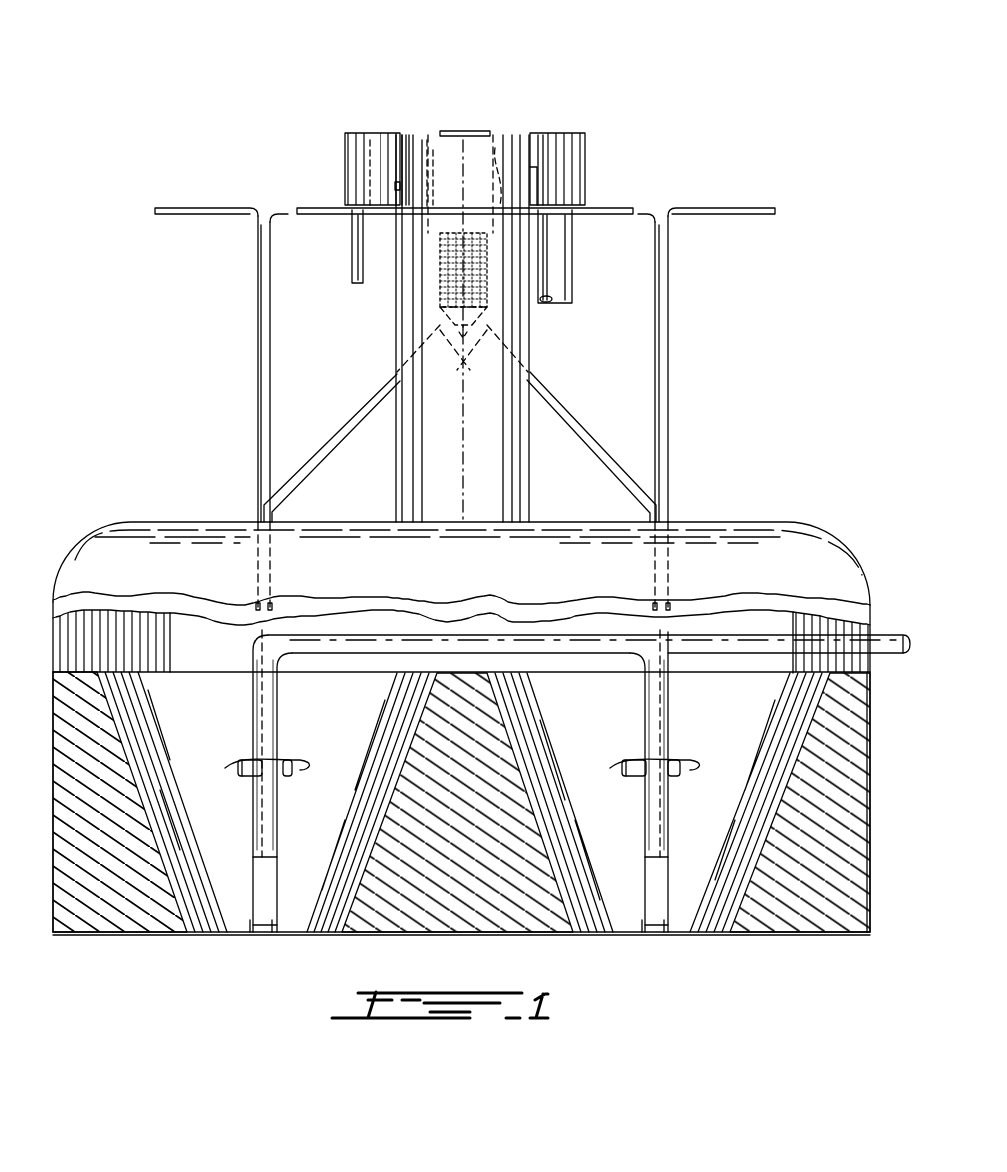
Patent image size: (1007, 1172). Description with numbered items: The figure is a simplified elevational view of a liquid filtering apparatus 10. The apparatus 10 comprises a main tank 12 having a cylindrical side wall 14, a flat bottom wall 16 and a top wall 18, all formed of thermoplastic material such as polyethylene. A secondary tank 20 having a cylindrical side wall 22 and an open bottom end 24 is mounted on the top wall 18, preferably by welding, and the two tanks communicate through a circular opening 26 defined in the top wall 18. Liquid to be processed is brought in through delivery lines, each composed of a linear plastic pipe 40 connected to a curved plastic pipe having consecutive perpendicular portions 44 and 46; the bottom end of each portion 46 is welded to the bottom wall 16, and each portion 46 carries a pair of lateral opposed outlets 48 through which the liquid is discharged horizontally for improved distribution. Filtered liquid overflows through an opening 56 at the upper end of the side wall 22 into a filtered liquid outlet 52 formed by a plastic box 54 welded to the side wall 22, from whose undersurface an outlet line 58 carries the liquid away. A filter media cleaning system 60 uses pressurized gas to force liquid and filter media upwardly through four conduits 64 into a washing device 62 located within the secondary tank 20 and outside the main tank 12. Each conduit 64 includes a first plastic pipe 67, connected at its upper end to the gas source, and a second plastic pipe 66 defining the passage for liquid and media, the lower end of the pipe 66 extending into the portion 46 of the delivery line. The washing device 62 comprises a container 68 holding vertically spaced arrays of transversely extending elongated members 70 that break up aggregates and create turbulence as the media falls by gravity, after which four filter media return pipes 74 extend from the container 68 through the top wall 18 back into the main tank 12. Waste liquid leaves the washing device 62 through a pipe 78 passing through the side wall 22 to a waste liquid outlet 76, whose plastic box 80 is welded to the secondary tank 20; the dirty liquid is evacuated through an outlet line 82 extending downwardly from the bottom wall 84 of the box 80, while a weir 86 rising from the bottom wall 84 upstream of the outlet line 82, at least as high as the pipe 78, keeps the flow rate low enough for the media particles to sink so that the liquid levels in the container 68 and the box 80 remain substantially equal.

The apparatus 10 is at (680, 98).
The main tank 12 is at (833, 937).
The cylindrical side wall 14 is at (53, 632).
The flat bottom wall 16 is at (148, 936).
The top wall 18 is at (350, 522).
The secondary tank 20 is at (535, 333).
The cylindrical side wall 22 is at (398, 333).
The open bottom end 24 is at (440, 522).
The circular opening 26 is at (466, 528).
The linear plastic pipe 40 is at (645, 640).
The perpendicular portion 44 is at (372, 640).
The perpendicular portion 46 is at (278, 720).
The lateral opposed outlets 48 is at (285, 765).
The filtered liquid outlet 52 is at (580, 132).
The plastic box 54 is at (590, 167).
The opening 56 is at (555, 165).
The outlet line 58 is at (572, 268).
The filter media cleaning system 60 is at (465, 105).
The washing device 62 is at (495, 148).
The conduits 64 is at (282, 204).
The second plastic pipe 66 is at (262, 280).
The first plastic pipe 67 is at (257, 352).
The container 68 is at (472, 131).
The elongated members 70 is at (440, 280).
The filter media return pipes 74 is at (355, 427).
The waste liquid outlet 76 is at (391, 133).
The pipe 78 is at (427, 140).
The plastic box 80 is at (348, 140).
The outlet line 82 is at (352, 250).
The bottom wall 84 is at (346, 192).
The weir 86 is at (362, 140).